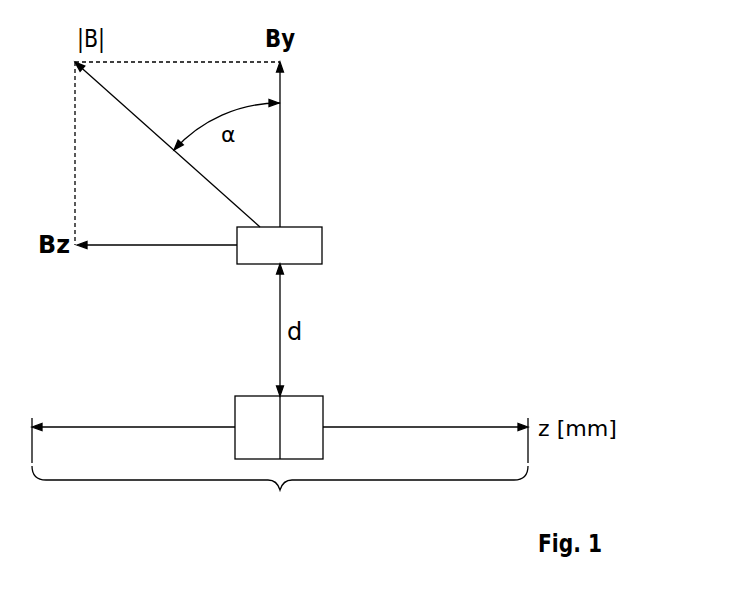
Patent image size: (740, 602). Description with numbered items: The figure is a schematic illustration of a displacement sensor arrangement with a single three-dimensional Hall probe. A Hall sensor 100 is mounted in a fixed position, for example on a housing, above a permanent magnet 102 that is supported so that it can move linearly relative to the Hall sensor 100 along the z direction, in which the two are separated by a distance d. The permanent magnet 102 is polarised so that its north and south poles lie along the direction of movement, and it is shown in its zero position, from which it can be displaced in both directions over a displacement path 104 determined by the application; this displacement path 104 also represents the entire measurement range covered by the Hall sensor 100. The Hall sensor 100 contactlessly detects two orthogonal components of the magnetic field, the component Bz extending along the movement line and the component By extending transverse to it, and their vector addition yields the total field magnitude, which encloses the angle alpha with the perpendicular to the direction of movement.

The Hall sensor 100 is at (322, 245).
The permanent magnet 102 is at (235, 413).
The measurement range 104 is at (280, 494).